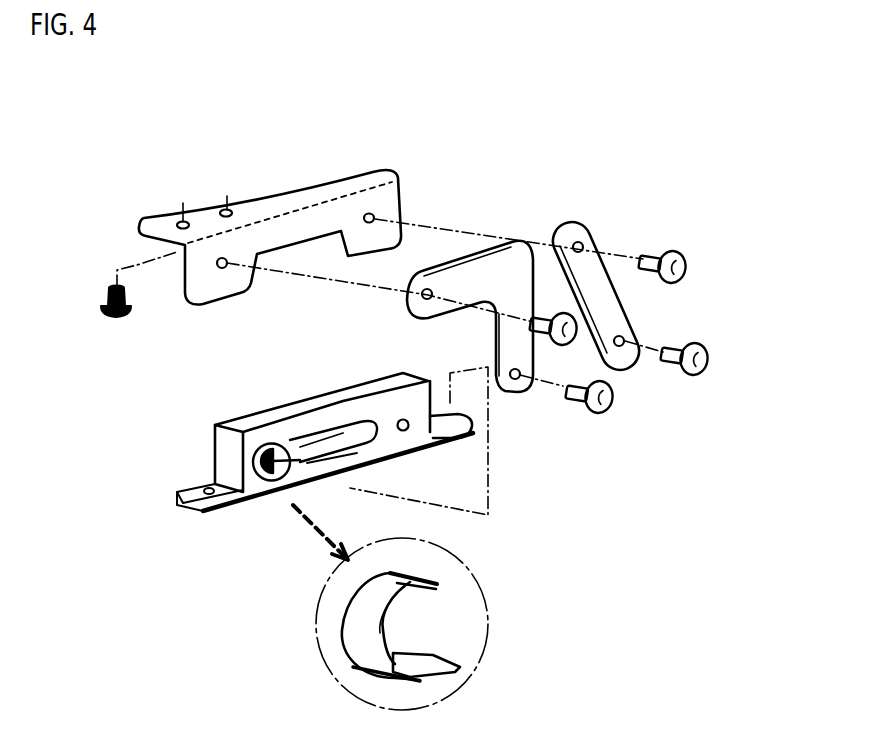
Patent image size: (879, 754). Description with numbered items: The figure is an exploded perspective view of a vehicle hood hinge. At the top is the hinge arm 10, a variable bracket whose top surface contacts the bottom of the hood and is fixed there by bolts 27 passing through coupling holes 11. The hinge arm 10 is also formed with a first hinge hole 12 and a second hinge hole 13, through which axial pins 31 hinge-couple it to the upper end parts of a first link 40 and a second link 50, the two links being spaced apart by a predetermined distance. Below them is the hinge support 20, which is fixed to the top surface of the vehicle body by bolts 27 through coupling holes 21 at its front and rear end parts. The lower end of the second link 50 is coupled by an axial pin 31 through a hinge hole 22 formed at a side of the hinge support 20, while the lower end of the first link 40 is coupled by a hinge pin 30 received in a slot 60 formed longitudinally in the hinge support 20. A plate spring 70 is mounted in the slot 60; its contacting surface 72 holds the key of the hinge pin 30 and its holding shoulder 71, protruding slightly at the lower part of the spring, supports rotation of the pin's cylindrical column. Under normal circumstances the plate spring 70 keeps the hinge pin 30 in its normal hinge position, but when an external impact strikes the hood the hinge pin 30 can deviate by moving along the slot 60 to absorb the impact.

The hinge arm 10 is at (363, 178).
The coupling holes 11 is at (225, 210).
The first hinge hole 12 is at (220, 268).
The second hinge hole 13 is at (375, 217).
The bolts 27 is at (100, 316).
The hinge support 20 is at (187, 523).
The coupling holes 21 is at (204, 488).
The hinge hole 22 is at (406, 420).
The slot 60 is at (348, 410).
The first link 40 is at (522, 411).
The hinge pin 30 is at (614, 405).
The axial pins 31 is at (708, 347).
The second link 50 is at (580, 223).
The plate spring 70 is at (353, 637).
The holding shoulder 71 is at (433, 654).
The contacting surface 72 is at (438, 585).